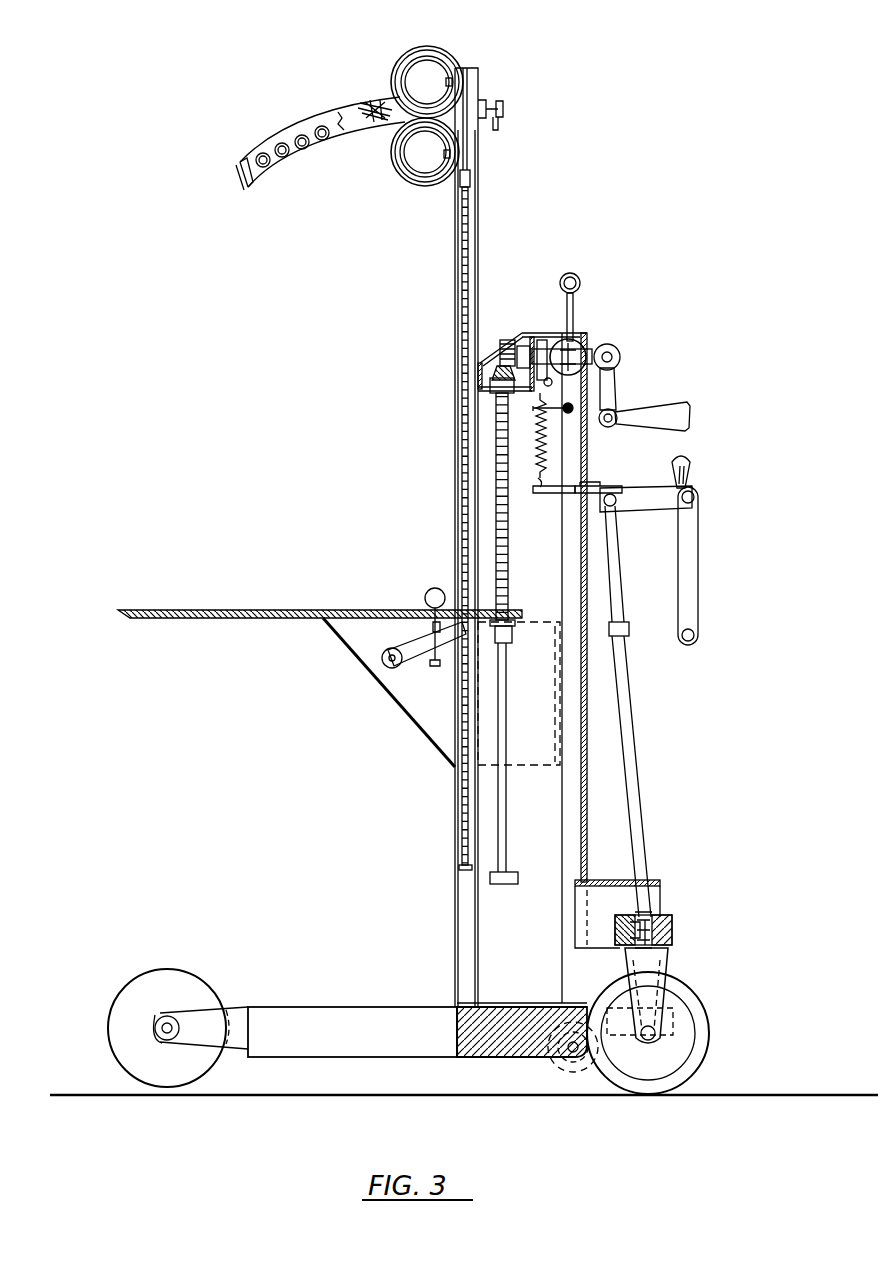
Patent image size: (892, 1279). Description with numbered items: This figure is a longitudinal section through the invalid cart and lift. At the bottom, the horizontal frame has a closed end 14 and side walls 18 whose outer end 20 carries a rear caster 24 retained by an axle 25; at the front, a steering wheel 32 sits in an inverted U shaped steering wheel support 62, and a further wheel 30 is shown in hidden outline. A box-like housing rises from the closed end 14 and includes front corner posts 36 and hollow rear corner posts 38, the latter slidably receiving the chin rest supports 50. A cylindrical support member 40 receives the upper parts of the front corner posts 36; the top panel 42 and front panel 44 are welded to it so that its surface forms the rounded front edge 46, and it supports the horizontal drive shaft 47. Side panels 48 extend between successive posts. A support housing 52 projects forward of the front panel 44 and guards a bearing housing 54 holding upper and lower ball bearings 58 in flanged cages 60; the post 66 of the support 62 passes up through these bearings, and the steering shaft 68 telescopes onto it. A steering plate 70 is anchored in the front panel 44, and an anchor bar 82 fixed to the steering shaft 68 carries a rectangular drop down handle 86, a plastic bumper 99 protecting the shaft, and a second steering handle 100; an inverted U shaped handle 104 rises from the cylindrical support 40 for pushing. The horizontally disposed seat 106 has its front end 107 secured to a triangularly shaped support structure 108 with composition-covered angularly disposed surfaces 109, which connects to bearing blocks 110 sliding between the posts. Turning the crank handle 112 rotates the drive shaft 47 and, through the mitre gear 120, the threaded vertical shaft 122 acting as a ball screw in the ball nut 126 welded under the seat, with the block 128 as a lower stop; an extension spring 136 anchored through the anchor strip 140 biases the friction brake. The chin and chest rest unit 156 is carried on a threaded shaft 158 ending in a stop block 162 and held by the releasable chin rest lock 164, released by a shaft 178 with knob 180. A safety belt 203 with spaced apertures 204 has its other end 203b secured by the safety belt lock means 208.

The closed end 14 is at (465, 1060).
The side walls 18 is at (350, 1046).
The outer end 20 is at (270, 1012).
The rear caster 24 is at (115, 1036).
The axle 25 is at (168, 1022).
The caster wheel 30 is at (560, 1060).
The steering wheel 32 is at (698, 1060).
The front corner posts 36 is at (562, 860).
The rear corner posts 38 is at (456, 946).
The cylindrical support member 40 is at (584, 345).
The top panel 42 is at (500, 350).
The front panel 44 is at (590, 470).
The front edge 46 is at (605, 348).
The horizontal drive shaft 47 is at (612, 352).
The side panels 48 is at (528, 982).
The chin rest supports 50 is at (455, 274).
The support housing 52 is at (606, 895).
The bearing housing 54 is at (657, 930).
The ball bearings 58 is at (662, 918).
The flanged cages 60 is at (655, 905).
The steering wheel support 62 is at (650, 1002).
The post 66 is at (615, 925).
The steering shaft 68 is at (640, 792).
The steering plate 70 is at (593, 487).
The anchor bar 82 is at (645, 505).
The drop down handle 86 is at (700, 578).
The plastic bumper 99 is at (627, 637).
The second steering handle 100 is at (690, 470).
The handle 104 is at (573, 274).
The seat 106 is at (160, 608).
The front end 107 is at (428, 610).
The triangular support structure 108 is at (400, 690).
The angularly disposed surfaces 109 is at (365, 675).
The bearing blocks 110 is at (560, 770).
The crank handle 112 is at (688, 406).
The mitre gear 120 is at (492, 357).
The vertical shaft 122 is at (500, 585).
The ball nut 126 is at (520, 640).
The block 128 is at (545, 303).
The extension spring 136 is at (535, 437).
The anchor strip 140 is at (549, 495).
The chin and chest rest unit 156 is at (453, 48).
The threaded shaft 158 is at (460, 497).
The stop block 162 is at (460, 867).
The releasable chin rest lock 164 is at (428, 676).
The shaft 178 is at (395, 650).
The knob 180 is at (438, 587).
The safety belt 203 is at (380, 104).
The other end of the belt 203b is at (244, 188).
The spaced apertures 204 is at (283, 142).
The safety belt lock means 208 is at (505, 107).